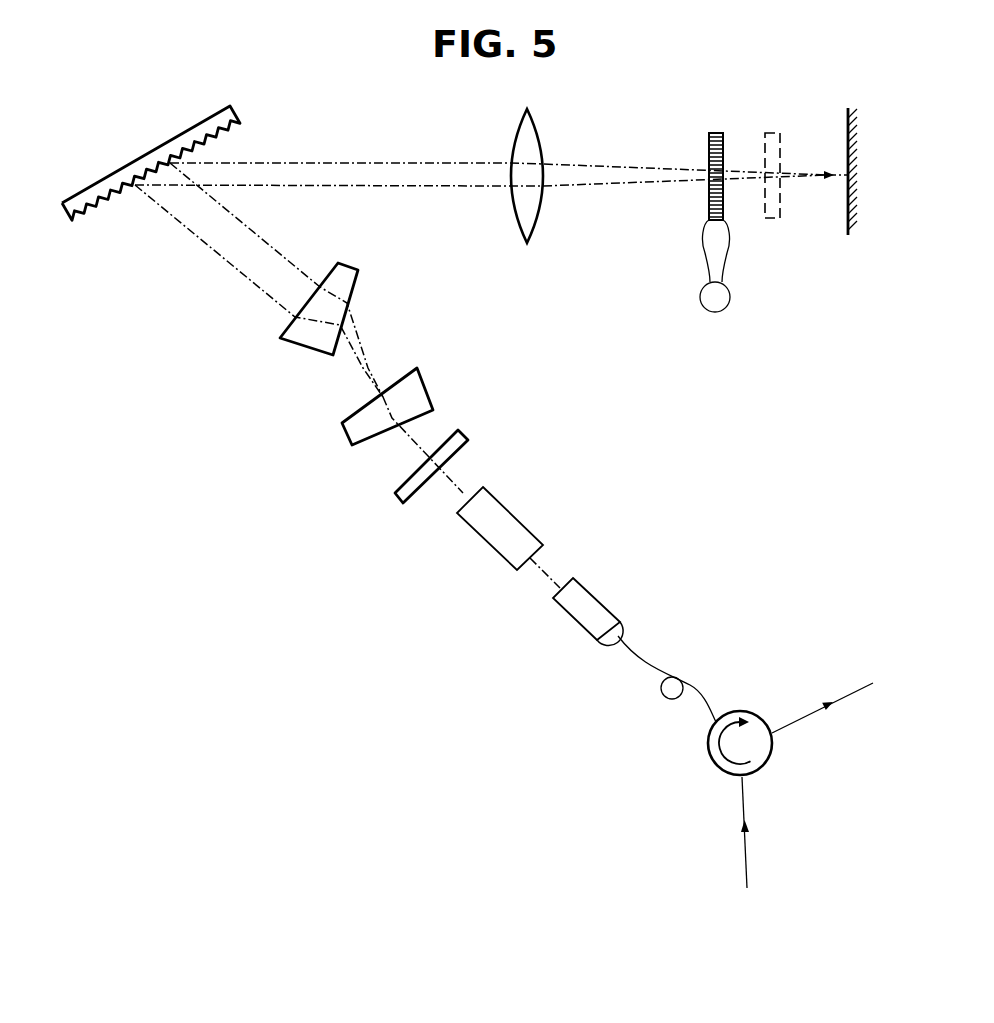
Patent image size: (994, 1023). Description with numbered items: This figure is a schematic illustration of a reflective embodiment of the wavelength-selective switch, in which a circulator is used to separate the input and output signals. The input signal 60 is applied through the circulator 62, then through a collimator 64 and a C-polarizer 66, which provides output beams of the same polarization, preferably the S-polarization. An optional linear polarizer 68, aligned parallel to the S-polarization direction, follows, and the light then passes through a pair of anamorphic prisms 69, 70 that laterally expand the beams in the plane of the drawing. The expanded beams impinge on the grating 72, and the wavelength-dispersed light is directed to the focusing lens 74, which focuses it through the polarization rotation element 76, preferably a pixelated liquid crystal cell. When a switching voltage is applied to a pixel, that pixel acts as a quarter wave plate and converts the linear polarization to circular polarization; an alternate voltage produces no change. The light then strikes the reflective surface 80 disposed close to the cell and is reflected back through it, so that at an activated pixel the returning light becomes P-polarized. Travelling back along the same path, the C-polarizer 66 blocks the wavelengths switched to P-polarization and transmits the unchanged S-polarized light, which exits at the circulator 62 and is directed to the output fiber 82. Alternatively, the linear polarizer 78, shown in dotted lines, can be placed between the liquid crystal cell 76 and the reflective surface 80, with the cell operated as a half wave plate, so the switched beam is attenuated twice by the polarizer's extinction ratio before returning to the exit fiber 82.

The input signal 60 is at (743, 813).
The circulator 62 is at (732, 710).
The collimator 64 is at (595, 593).
The C-polarizer 66 is at (512, 512).
The linear polarizer 68 is at (463, 435).
The anamorphic prism 69 is at (420, 380).
The anamorphic prism 70 is at (358, 293).
The grating 72 is at (183, 133).
The focusing lens 74 is at (520, 140).
The polarization rotation element 76 is at (712, 132).
The linear polarizer 78 is at (768, 133).
The reflective surface 80 is at (848, 110).
The output fiber 82 is at (840, 697).